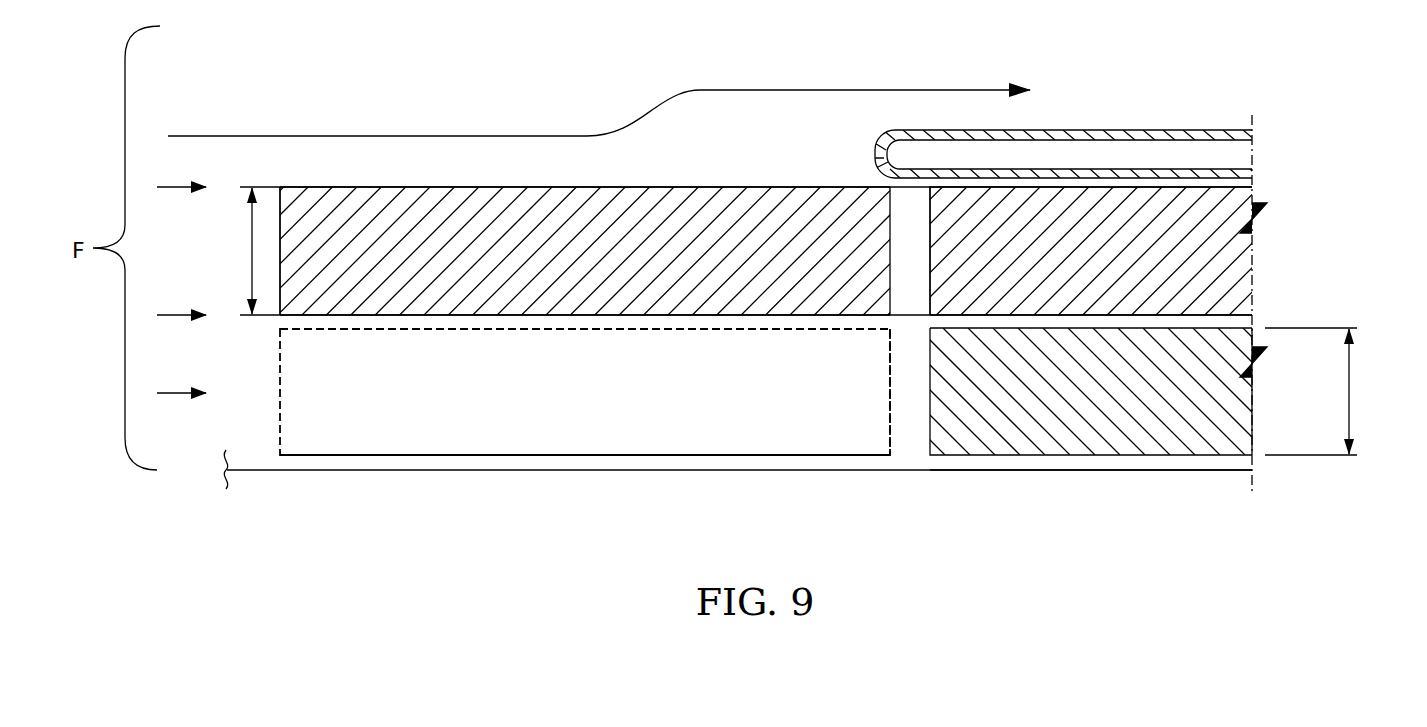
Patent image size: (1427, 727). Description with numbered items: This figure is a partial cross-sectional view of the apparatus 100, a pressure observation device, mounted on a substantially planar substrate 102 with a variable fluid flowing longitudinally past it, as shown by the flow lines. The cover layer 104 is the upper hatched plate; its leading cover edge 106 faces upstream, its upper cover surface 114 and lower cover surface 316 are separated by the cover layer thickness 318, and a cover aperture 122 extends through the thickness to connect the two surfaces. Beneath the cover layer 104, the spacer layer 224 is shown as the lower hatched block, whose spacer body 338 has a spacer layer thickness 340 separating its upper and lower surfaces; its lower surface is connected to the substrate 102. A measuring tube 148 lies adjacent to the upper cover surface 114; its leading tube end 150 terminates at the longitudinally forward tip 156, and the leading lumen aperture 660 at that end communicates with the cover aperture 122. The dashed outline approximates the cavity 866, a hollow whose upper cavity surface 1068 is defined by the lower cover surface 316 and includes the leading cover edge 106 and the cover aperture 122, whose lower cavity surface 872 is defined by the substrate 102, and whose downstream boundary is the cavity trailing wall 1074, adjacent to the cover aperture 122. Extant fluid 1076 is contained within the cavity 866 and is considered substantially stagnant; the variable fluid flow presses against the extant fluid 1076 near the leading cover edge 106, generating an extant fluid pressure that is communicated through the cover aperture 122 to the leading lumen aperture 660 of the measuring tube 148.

The apparatus 100 is at (1303, 99).
The substrate 102 is at (1125, 470).
The cover layer 104 is at (731, 171).
The leading cover edge 106 is at (282, 213).
The upper cover surface 114 is at (503, 187).
The cover aperture 122 is at (932, 217).
The measuring tube 148 is at (1155, 98).
The leading tube end 150 is at (915, 118).
The longitudinally forward tip 156 is at (877, 142).
The spacer layer 224 is at (1259, 397).
The lower cover surface 316 is at (487, 316).
The cover layer thickness 318 is at (251, 251).
The spacer body 338 is at (1158, 419).
The spacer layer thickness 340 is at (1350, 375).
The leading lumen aperture 660 is at (908, 172).
The cavity 866 is at (771, 468).
The lower cavity surface 872 is at (487, 457).
The upper cavity surface 1068 is at (585, 330).
The cavity trailing wall 1074 is at (890, 437).
The extant fluid 1076 is at (750, 406).